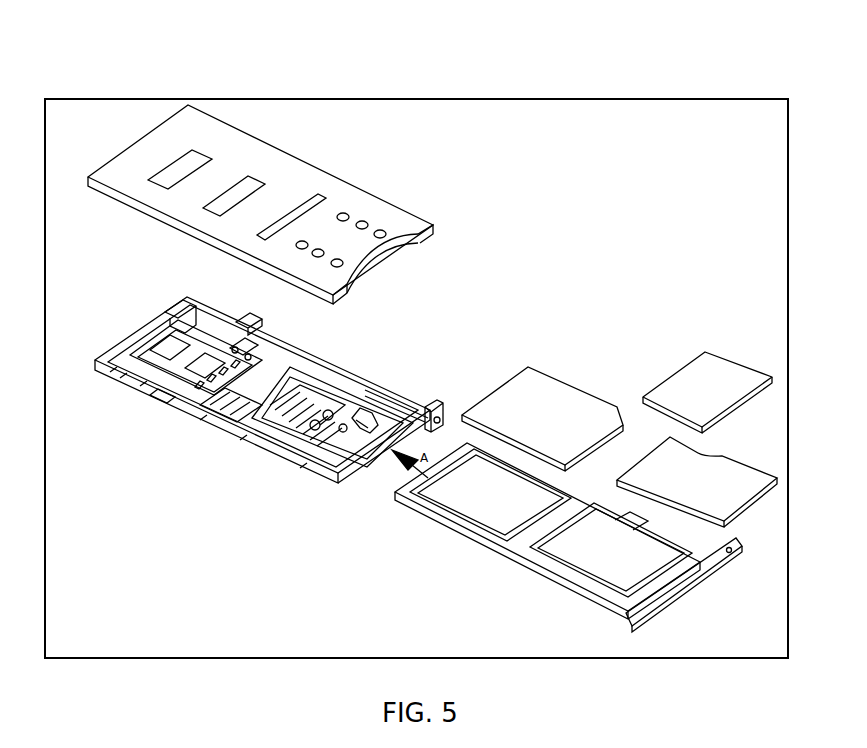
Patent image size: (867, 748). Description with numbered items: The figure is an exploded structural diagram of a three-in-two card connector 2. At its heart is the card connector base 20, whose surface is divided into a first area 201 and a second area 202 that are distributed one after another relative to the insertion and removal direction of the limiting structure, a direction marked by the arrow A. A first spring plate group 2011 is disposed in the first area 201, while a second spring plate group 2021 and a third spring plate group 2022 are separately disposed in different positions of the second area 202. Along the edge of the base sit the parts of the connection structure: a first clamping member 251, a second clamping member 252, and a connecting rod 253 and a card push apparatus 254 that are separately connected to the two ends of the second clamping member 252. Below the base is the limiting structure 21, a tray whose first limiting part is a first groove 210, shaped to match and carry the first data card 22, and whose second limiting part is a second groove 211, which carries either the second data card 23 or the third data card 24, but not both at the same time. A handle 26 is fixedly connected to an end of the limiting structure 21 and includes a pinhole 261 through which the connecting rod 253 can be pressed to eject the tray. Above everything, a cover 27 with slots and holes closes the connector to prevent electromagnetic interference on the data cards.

The three-in-two card connector 2 is at (428, 98).
The card connector base 20 is at (271, 369).
The first area 201 is at (140, 362).
The first spring plate group 2011 is at (218, 393).
The second area 202 is at (304, 380).
The second spring plate group 2021 is at (303, 408).
The third spring plate group 2022 is at (366, 425).
The limiting structure 21 is at (586, 550).
The first groove 210 is at (472, 506).
The second groove 211 is at (582, 559).
The first data card 22 is at (548, 394).
The second data card 23 is at (713, 478).
The third data card 24 is at (719, 371).
The first clamping member 251 is at (165, 384).
The second clamping member 252 is at (243, 327).
The connecting rod 253 is at (428, 406).
The card push apparatus 254 is at (173, 305).
The handle 26 is at (673, 598).
The pinhole 261 is at (727, 558).
The cover 27 is at (326, 195).